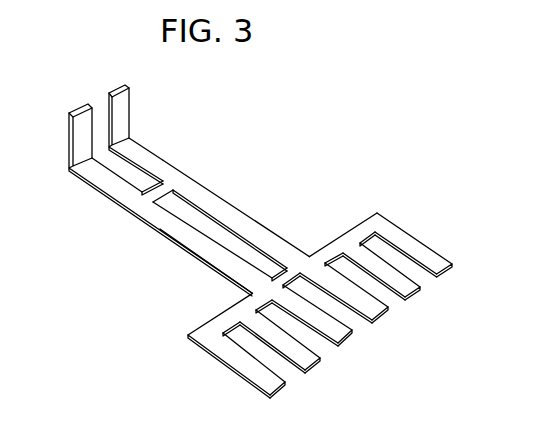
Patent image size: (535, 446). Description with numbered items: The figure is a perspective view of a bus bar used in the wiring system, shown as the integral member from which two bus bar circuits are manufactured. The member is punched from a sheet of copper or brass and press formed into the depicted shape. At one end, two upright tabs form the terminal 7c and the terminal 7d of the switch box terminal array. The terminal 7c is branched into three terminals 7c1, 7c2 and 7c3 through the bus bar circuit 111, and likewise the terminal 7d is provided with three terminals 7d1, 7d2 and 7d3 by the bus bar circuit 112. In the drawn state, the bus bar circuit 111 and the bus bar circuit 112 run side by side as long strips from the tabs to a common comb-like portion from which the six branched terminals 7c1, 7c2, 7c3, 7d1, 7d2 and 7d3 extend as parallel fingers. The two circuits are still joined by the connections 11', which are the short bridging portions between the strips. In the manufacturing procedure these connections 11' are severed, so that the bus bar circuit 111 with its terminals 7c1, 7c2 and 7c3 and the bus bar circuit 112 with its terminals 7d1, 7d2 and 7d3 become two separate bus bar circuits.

The terminal 7c is at (122, 110).
The terminal 7d is at (82, 132).
The branched terminal 7c1 is at (447, 268).
The branched terminal 7c2 is at (405, 291).
The branched terminal 7c3 is at (370, 312).
The branched terminal 7d1 is at (336, 335).
The branched terminal 7d2 is at (305, 363).
The branched terminal 7d3 is at (270, 386).
The bus bar circuit 111 is at (226, 215).
The bus bar circuit 112 is at (193, 235).
The connections 11' is at (231, 212).